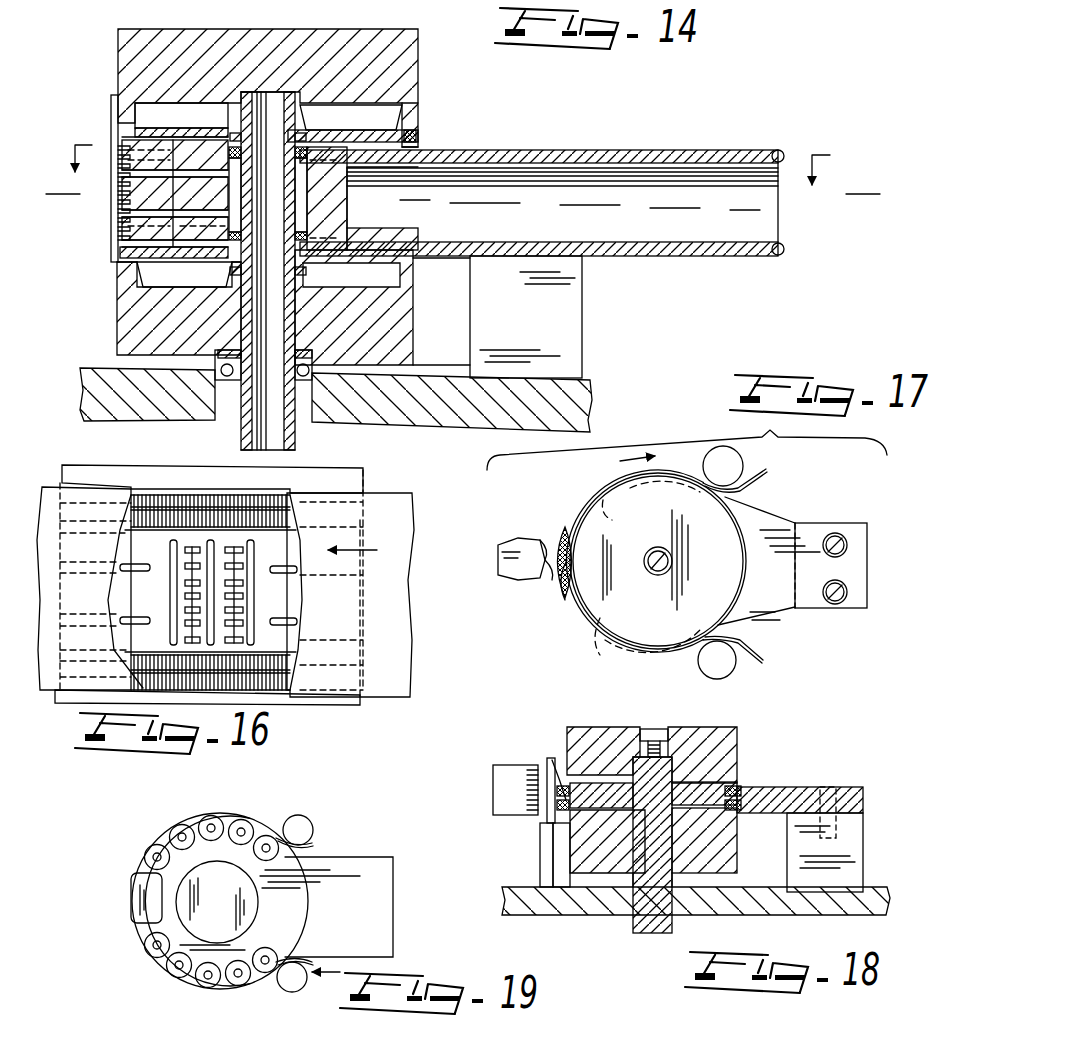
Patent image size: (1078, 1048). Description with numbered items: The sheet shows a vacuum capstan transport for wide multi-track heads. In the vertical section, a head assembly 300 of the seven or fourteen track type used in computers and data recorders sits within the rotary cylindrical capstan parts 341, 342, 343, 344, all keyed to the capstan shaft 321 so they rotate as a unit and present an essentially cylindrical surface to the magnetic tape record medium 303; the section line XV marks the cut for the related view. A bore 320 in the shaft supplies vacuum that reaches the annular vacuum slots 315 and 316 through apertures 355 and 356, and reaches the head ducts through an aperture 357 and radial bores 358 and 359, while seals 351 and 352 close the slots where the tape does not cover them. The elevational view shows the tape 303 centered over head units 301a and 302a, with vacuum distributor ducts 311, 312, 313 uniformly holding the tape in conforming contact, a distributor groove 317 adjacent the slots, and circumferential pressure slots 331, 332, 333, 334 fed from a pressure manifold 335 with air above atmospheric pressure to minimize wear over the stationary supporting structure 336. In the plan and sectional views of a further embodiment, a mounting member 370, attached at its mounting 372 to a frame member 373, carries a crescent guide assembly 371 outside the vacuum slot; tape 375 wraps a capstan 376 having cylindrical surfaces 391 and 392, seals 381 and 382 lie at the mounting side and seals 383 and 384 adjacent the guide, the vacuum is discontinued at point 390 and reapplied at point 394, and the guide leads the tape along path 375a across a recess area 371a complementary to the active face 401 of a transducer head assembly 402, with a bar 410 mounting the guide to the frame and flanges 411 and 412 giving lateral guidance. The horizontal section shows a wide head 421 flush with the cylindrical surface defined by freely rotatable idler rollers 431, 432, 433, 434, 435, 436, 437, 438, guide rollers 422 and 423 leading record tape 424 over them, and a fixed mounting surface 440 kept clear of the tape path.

In FIG. 14, the head assembly 300 is at (133, 140).
In FIG. 14, the head unit 301a is at (122, 150).
In FIG. 16, the head unit 301a is at (190, 545).
In FIG. 16, the head unit 302a is at (236, 545).
In FIG. 14, the magnetic tape record medium 303 is at (117, 275).
In FIG. 16, the magnetic tape record medium 303 is at (380, 493).
In FIG. 16, the vacuum distributor duct 311 is at (170, 630).
In FIG. 16, the vacuum distributor duct 312 is at (214, 595).
In FIG. 16, the vacuum distributor duct 313 is at (254, 640).
In FIG. 14, the vacuum slot 315 is at (111, 118).
In FIG. 16, the vacuum slot 315 is at (150, 500).
In FIG. 14, the vacuum slot 316 is at (117, 262).
In FIG. 16, the vacuum slot 316 is at (280, 680).
In FIG. 16, the distributor groove 317 is at (280, 665).
In FIG. 14, the bore 320 is at (285, 320).
In FIG. 14, the capstan shaft 321 is at (290, 440).
In FIG. 14, the pressure slot 331 is at (181, 115).
In FIG. 16, the pressure slot 331 is at (130, 565).
In FIG. 16, the pressure slot 332 is at (125, 618).
In FIG. 16, the pressure slot 333 is at (280, 572).
In FIG. 16, the pressure slot 334 is at (345, 628).
In FIG. 14, the pressure manifold 335 is at (760, 240).
In FIG. 16, the stationary supporting structure 336 is at (130, 545).
In FIG. 14, the rotary cylindrical capstan part 341 is at (418, 100).
In FIG. 16, the rotary cylindrical capstan part 341 is at (380, 502).
In FIG. 14, the rotary cylindrical capstan part 342 is at (418, 142).
In FIG. 16, the rotary cylindrical capstan part 342 is at (380, 520).
In FIG. 14, the rotary cylindrical capstan part 343 is at (413, 262).
In FIG. 16, the rotary cylindrical capstan part 343 is at (300, 668).
In FIG. 14, the rotary cylindrical capstan part 344 is at (413, 305).
In FIG. 16, the rotary cylindrical capstan part 344 is at (290, 690).
In FIG. 14, the seal 351 is at (420, 128).
In FIG. 14, the seal 352 is at (413, 285).
In FIG. 14, the aperture 355 is at (300, 108).
In FIG. 14, the aperture 356 is at (232, 275).
In FIG. 14, the aperture 357 is at (295, 206).
In FIG. 14, the radial bore 358 is at (188, 170).
In FIG. 16, the radial bore 358 is at (193, 545).
In FIG. 14, the radial bore 359 is at (135, 232).
In FIG. 17, the mounting member 370 is at (752, 520).
In FIG. 18, the mounting member 370 is at (765, 787).
In FIG. 17, the crescent guide assembly 371 is at (562, 605).
In FIG. 18, the crescent guide assembly 371 is at (556, 760).
In FIG. 17, the recess area 371a is at (555, 580).
In FIG. 18, the mounting 372 is at (855, 840).
In FIG. 18, the frame member 373 is at (868, 893).
In FIG. 17, the tape 375 is at (758, 652).
In FIG. 17, the tape path 375a is at (555, 520).
In FIG. 18, the tape path 375a is at (545, 800).
In FIG. 17, the capstan 376 is at (660, 625).
In FIG. 18, the capstan 376 is at (680, 745).
In FIG. 18, the seal 381 is at (745, 786).
In FIG. 18, the seal 382 is at (742, 812).
In FIG. 18, the seal 383 is at (590, 788).
In FIG. 18, the seal 384 is at (562, 878).
In FIG. 17, the vacuum discontinuation point 390 is at (607, 630).
In FIG. 18, the capstan cylindrical surface 391 is at (566, 775).
In FIG. 18, the capstan cylindrical surface 392 is at (546, 855).
In FIG. 17, the vacuum reapplication point 394 is at (624, 508).
In FIG. 17, the active face 401 is at (546, 545).
In FIG. 18, the active face 401 is at (540, 765).
In FIG. 17, the transducer head assembly 402 is at (508, 575).
In FIG. 18, the transducer head assembly 402 is at (505, 763).
In FIG. 18, the bar 410 is at (555, 878).
In FIG. 18, the flange 411 is at (548, 810).
In FIG. 18, the flange 412 is at (509, 702).
In FIG. 19, the wide head 421 is at (140, 898).
In FIG. 19, the guide roller 422 is at (306, 820).
In FIG. 19, the guide roller 423 is at (298, 990).
In FIG. 19, the record tape 424 is at (315, 960).
In FIG. 19, the idler roller 431 is at (265, 973).
In FIG. 19, the idler roller 432 is at (237, 986).
In FIG. 19, the idler roller 433 is at (210, 988).
In FIG. 19, the idler roller 434 is at (176, 978).
In FIG. 19, the idler roller 435 is at (150, 952).
In FIG. 19, the idler roller 436 is at (150, 848).
In FIG. 19, the idler roller 437 is at (180, 825).
In FIG. 19, the idler roller 438 is at (212, 815).
In FIG. 19, the fixed mounting surface 440 is at (393, 902).
In FIG. 14, the section line XV is at (463, 170).